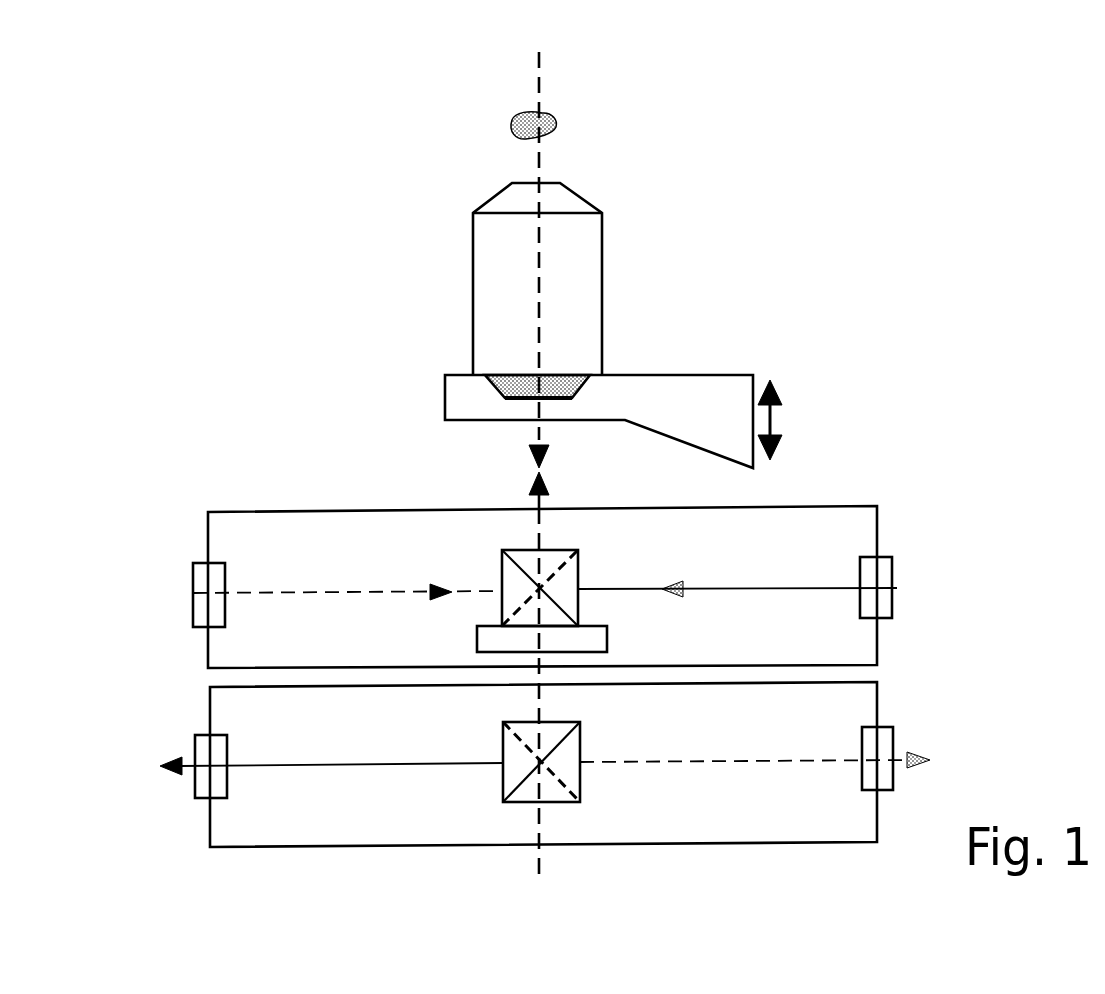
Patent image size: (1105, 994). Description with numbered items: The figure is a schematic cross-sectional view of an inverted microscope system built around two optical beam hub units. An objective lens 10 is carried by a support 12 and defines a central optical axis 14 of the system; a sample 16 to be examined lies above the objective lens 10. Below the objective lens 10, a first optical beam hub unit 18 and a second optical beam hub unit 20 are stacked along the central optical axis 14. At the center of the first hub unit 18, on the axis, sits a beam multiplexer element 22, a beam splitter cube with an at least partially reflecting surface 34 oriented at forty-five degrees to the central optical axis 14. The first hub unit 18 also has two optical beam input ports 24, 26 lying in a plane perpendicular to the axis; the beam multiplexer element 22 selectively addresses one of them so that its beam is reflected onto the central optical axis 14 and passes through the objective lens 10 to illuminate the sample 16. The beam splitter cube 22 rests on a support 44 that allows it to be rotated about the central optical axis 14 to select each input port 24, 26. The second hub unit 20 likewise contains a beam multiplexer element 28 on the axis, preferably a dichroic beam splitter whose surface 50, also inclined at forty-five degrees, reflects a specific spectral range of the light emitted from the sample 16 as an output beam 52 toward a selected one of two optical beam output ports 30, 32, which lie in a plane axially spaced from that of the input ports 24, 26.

The objective lens 10 is at (565, 205).
The support 12 is at (622, 385).
The central optical axis 14 is at (539, 93).
The sample 16 is at (556, 125).
The first optical beam hub unit 18 is at (237, 525).
The second optical beam hub unit 20 is at (840, 822).
The beam multiplexer element 22 is at (570, 578).
The optical beam input port 24 is at (884, 575).
The optical beam input port 26 is at (211, 571).
The beam multiplexer element 28 is at (568, 752).
The optical beam output port 30 is at (884, 745).
The optical beam output port 32 is at (218, 750).
The at least partially reflecting surface 34 is at (510, 573).
The support 44 is at (503, 641).
The beam splitting surface 50 is at (527, 772).
The output beam 52 is at (712, 760).